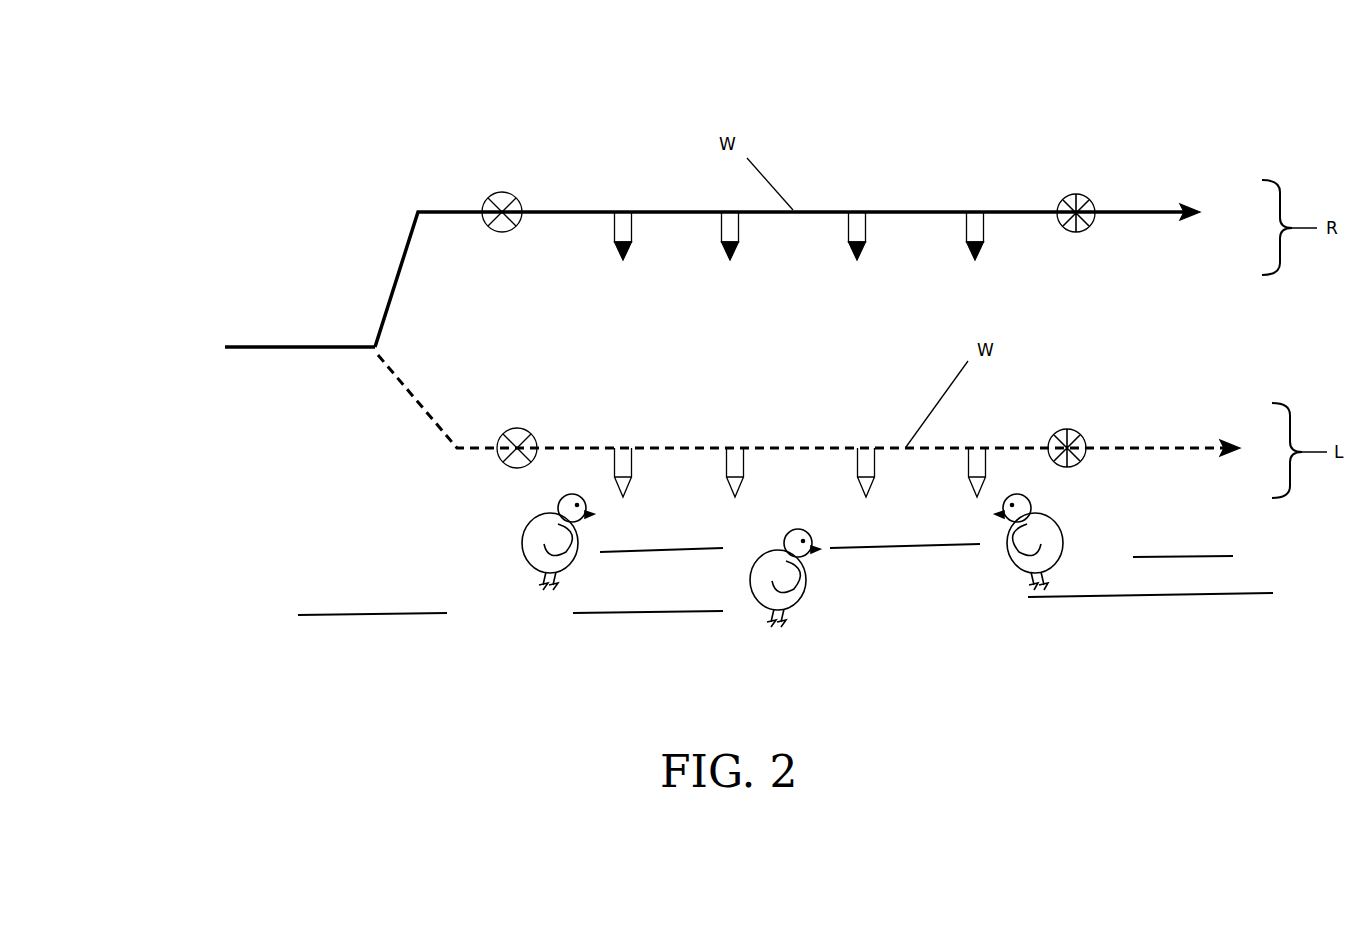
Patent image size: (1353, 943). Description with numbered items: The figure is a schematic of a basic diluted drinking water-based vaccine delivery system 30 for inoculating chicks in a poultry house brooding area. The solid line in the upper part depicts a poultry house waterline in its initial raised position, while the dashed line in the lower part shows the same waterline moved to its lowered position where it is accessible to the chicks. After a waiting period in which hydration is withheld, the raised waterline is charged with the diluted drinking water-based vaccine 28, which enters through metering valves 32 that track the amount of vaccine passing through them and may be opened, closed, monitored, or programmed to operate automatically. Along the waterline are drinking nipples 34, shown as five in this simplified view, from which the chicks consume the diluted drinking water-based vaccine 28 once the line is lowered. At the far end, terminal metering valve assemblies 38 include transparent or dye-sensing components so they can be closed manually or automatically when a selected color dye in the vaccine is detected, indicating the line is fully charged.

The diluted drinking water-based vaccine 28 is at (208, 347).
The diluted drinking water-based vaccine delivery system 30 is at (148, 178).
The metering valves 32 is at (515, 228).
The drinking nipples 34 is at (740, 445).
The terminal metering valve assemblies 38 is at (1076, 430).